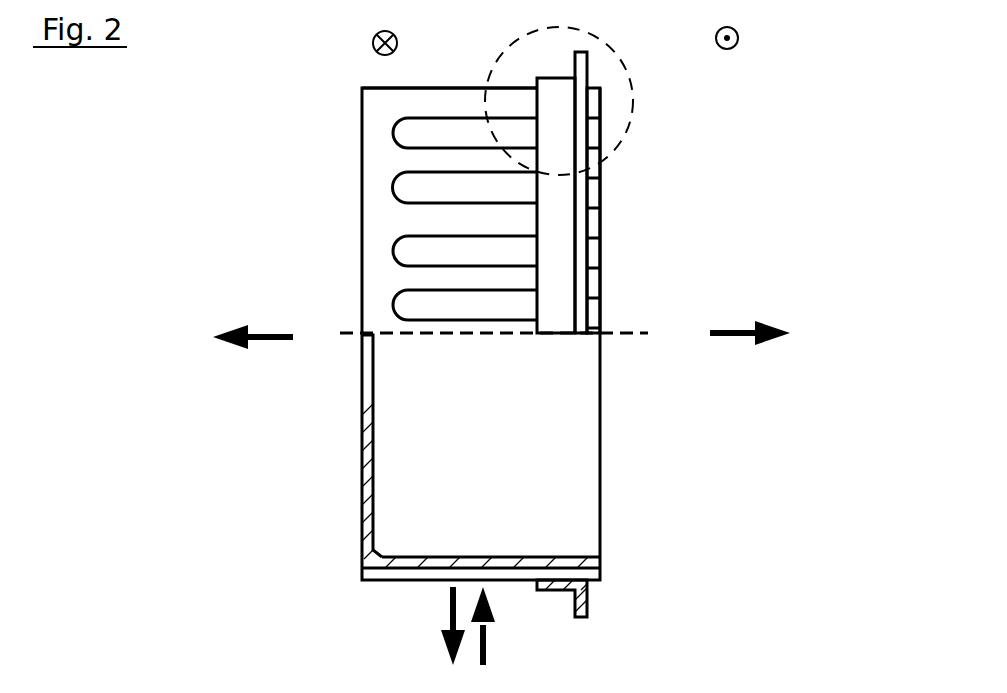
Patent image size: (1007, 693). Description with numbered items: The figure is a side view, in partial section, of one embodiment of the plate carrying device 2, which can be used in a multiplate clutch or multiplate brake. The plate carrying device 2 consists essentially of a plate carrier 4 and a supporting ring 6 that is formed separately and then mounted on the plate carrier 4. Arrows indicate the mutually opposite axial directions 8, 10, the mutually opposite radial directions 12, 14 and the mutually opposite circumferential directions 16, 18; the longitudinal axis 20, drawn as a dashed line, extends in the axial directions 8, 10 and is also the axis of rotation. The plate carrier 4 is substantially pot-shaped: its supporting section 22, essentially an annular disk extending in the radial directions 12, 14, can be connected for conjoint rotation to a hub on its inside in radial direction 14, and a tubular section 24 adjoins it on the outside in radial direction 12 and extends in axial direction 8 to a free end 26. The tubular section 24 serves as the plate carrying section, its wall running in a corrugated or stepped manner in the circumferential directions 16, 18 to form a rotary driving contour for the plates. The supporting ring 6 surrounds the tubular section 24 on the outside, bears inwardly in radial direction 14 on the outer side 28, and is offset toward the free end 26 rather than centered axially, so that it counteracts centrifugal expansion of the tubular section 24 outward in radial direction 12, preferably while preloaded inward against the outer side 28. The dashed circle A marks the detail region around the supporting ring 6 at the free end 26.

The plate carrying device 2 is at (782, 105).
The plate carrier 4 is at (345, 142).
The supporting ring 6 is at (604, 68).
The axial direction 8 is at (732, 330).
The axial direction 10 is at (275, 334).
The radial direction 12 is at (448, 605).
The radial direction 14 is at (487, 645).
The circumferential direction 16 is at (738, 37).
The circumferential direction 18 is at (373, 42).
The longitudinal axis 20 is at (395, 333).
The supporting section 22 is at (367, 447).
The tubular section 24 is at (497, 557).
The free end 26 is at (617, 133).
The outer side 28 is at (432, 87).
The detail region A is at (608, 38).